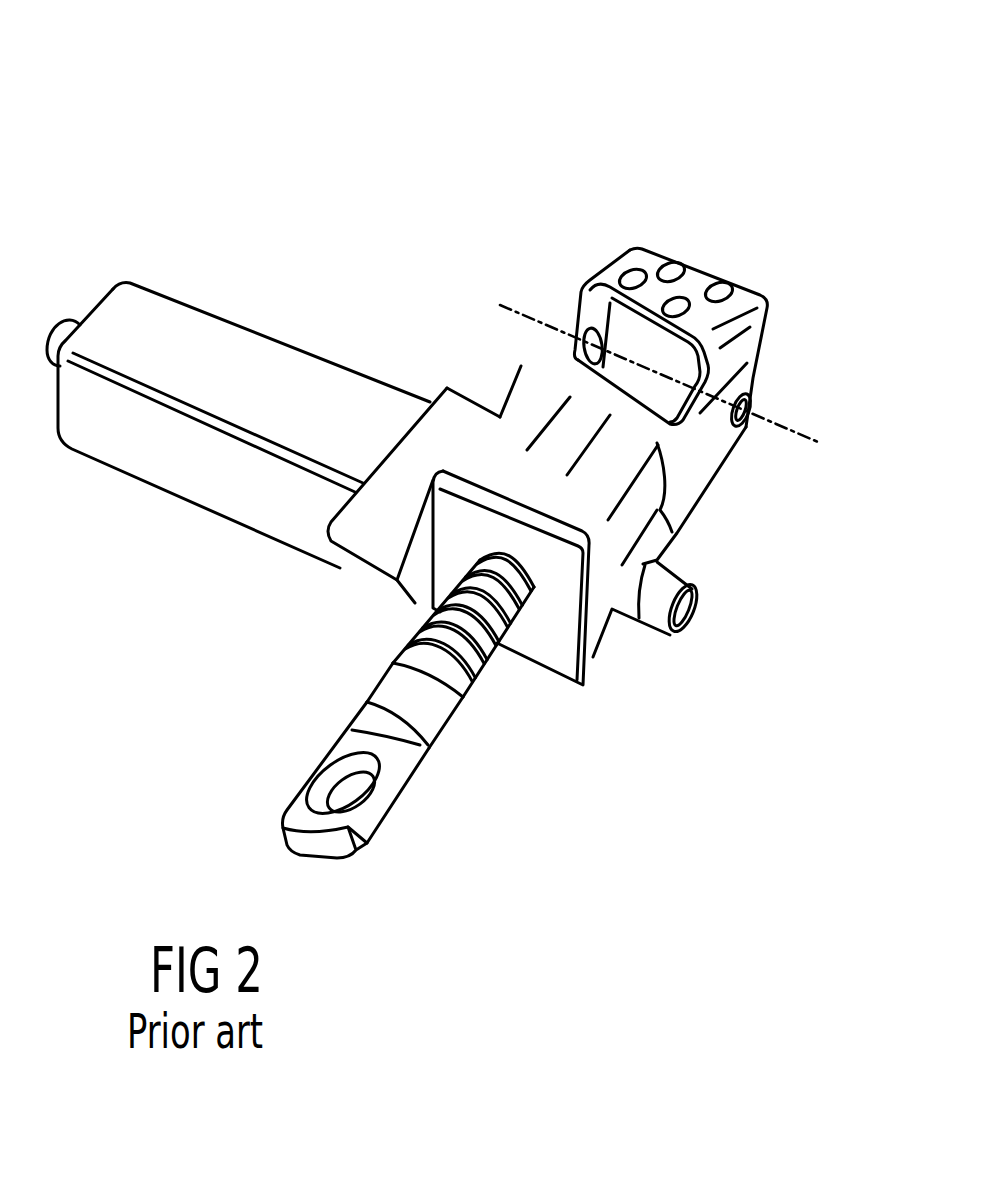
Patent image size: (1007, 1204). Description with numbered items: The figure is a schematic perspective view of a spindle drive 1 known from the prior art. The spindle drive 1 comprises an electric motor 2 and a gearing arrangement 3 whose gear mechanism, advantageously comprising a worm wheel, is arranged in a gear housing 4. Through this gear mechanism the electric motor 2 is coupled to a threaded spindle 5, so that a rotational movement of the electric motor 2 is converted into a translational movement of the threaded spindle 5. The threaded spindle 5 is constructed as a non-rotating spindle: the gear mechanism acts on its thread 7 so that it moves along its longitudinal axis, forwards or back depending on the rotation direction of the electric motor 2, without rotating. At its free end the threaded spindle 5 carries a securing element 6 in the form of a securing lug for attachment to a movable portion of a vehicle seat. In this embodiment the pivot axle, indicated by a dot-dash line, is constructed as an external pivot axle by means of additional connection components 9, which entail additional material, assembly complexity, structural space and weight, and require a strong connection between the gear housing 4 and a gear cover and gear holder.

The spindle drive 1 is at (640, 143).
The electric motor 2 is at (150, 298).
The gearing arrangement 3 is at (495, 398).
The gear housing 4 is at (577, 410).
The threaded spindle 5 is at (497, 648).
The securing element 6 is at (307, 778).
The thread 7 is at (473, 686).
The connection components 9 is at (748, 296).